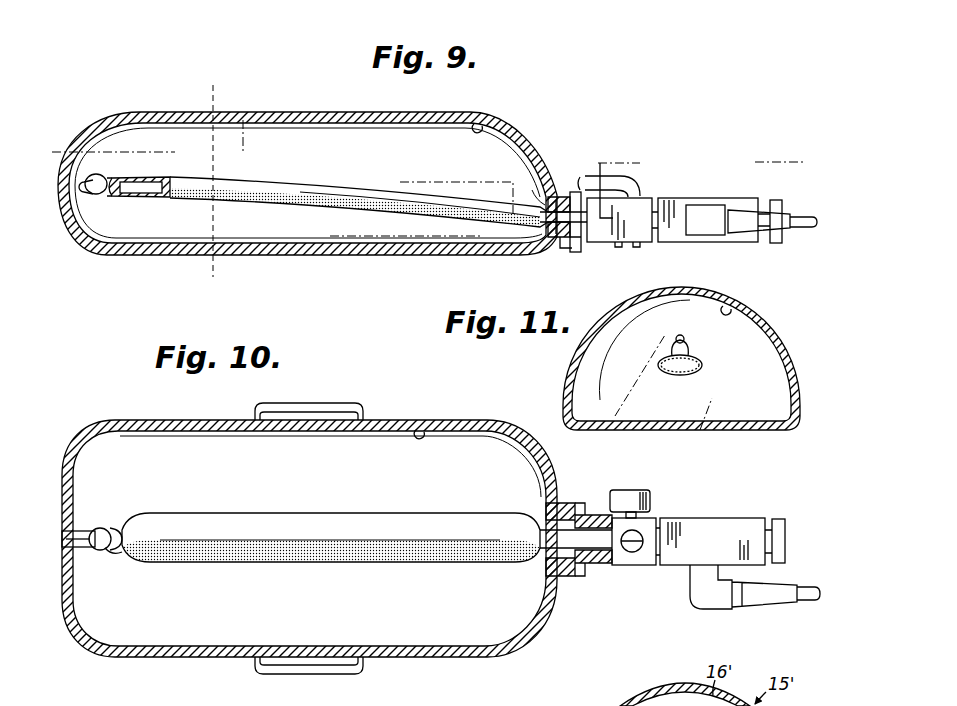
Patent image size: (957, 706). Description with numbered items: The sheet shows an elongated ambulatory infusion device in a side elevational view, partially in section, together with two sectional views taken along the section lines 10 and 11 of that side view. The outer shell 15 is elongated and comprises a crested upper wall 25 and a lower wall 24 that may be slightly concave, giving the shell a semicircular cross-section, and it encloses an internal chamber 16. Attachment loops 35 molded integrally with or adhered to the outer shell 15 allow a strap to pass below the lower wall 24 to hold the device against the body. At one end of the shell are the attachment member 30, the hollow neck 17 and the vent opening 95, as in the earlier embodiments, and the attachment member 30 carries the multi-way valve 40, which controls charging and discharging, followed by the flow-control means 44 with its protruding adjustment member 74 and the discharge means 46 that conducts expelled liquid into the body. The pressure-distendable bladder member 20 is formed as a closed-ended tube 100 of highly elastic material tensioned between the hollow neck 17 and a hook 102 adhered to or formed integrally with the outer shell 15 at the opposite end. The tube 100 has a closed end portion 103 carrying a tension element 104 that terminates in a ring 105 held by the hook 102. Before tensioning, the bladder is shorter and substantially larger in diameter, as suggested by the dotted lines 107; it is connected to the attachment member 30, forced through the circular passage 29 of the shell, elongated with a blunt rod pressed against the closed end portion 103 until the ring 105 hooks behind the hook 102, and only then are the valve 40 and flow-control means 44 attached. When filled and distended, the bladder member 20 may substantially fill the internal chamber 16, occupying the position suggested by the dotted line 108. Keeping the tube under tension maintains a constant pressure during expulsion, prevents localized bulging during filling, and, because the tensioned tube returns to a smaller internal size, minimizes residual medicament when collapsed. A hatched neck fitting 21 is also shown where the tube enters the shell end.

In FIG. 9, the section line 10— 10 is at (60, 150).
In FIG. 9, the section line 11— 11 is at (216, 96).
In FIG. 9, the outer shell 15 is at (344, 112).
In FIG. 10, the outer shell 15 is at (467, 420).
In FIG. 11, the outer shell 15 is at (772, 318).
In FIG. 9, the internal chamber 16 is at (476, 122).
In FIG. 10, the internal chamber 16 is at (418, 428).
In FIG. 11, the internal chamber 16 is at (728, 305).
In FIG. 9, the hollow neck 17 is at (522, 232).
In FIG. 10, the hollow neck 17 is at (530, 525).
In FIG. 9, the pressure-distendable bladder member 20 is at (283, 178).
In FIG. 10, the pressure-distendable bladder member 20 is at (252, 512).
In FIG. 11, the pressure-distendable bladder member 20 is at (652, 374).
In FIG. 9, the neck nut 21 is at (541, 230).
In FIG. 10, the neck nut 21 is at (538, 548).
In FIG. 9, the lower wall 24 is at (311, 250).
In FIG. 10, the lower wall 24 is at (163, 437).
In FIG. 11, the lower wall 24 is at (702, 426).
In FIG. 9, the crested upper wall 25 is at (283, 112).
In FIG. 11, the crested upper wall 25 is at (702, 293).
In FIG. 9, the circular passage 29 is at (576, 250).
In FIG. 10, the circular passage 29 is at (578, 576).
In FIG. 9, the attachment member 30 is at (572, 192).
In FIG. 10, the attachment member 30 is at (578, 515).
In FIG. 10, the attachment loops 35 is at (337, 403).
In FIG. 9, the multi-way valve 40 is at (647, 197).
In FIG. 10, the multi-way valve 40 is at (657, 518).
In FIG. 9, the flow-control means 44 is at (706, 197).
In FIG. 10, the flow-control means 44 is at (710, 518).
In FIG. 9, the discharge means 46 is at (800, 236).
In FIG. 10, the discharge means 46 is at (805, 603).
In FIG. 9, the adjustment member 74 is at (781, 208).
In FIG. 10, the adjustment member 74 is at (784, 530).
In FIG. 9, the vent opening 95 is at (532, 190).
In FIG. 9, the closed-ended tube 100 is at (364, 197).
In FIG. 10, the closed-ended tube 100 is at (345, 515).
In FIG. 11, the closed-ended tube 100 is at (706, 370).
In FIG. 9, the hook 102 is at (98, 174).
In FIG. 10, the hook 102 is at (92, 528).
In FIG. 11, the hook 102 is at (688, 345).
In FIG. 9, the closed end portion 103 is at (130, 176).
In FIG. 10, the closed end portion 103 is at (112, 553).
In FIG. 9, the tension element 104 is at (106, 200).
In FIG. 10, the tension element 104 is at (112, 526).
In FIG. 9, the ring 105 is at (80, 192).
In FIG. 10, the ring 105 is at (88, 548).
In FIG. 9, the dotted lines (preliminary shape) 107 is at (388, 198).
In FIG. 9, the dotted line (distended position) 108 is at (356, 178).